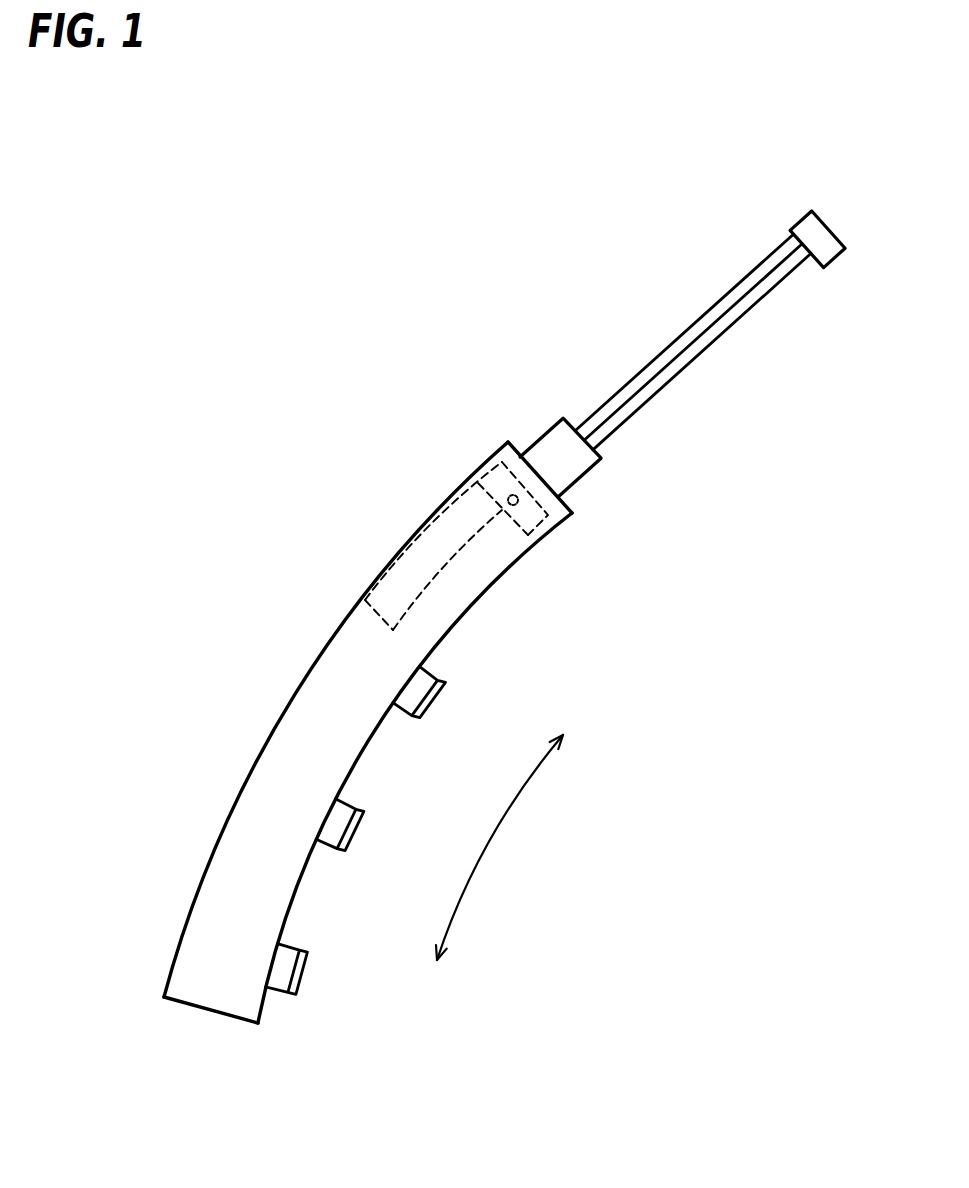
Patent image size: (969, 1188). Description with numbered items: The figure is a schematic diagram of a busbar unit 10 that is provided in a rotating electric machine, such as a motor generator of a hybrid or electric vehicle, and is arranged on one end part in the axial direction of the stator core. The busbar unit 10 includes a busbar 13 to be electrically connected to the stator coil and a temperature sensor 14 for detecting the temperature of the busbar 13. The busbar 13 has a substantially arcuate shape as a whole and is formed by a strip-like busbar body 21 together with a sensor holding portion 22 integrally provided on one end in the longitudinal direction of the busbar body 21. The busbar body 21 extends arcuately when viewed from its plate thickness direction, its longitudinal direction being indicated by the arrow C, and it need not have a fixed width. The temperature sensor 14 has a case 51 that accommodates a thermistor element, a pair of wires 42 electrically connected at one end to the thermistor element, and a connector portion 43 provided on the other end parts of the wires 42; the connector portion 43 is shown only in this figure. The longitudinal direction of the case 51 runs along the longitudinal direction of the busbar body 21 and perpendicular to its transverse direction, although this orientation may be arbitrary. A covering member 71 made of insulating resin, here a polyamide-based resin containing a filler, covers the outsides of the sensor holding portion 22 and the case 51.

The busbar unit 10 is at (273, 292).
The busbar 13 is at (396, 556).
The temperature sensor 14 is at (549, 433).
The busbar body 21 is at (431, 523).
The sensor holding portion 22 is at (512, 523).
The wires 42 is at (680, 334).
The connector portion 43 is at (818, 232).
The case 51 is at (568, 460).
The covering member 71 is at (210, 915).